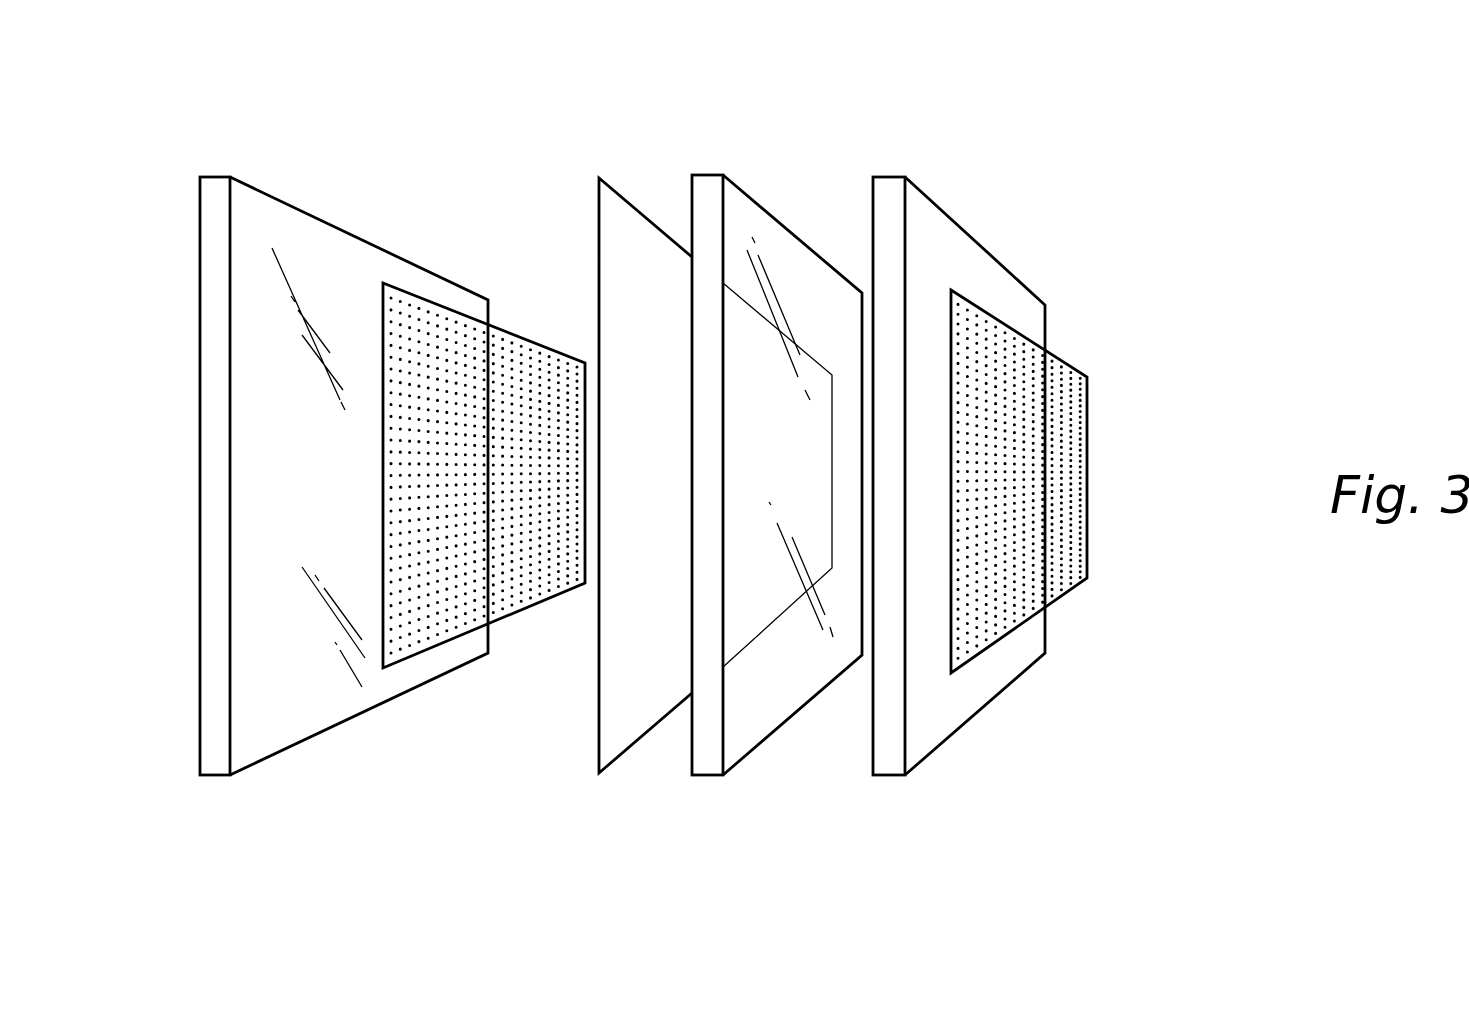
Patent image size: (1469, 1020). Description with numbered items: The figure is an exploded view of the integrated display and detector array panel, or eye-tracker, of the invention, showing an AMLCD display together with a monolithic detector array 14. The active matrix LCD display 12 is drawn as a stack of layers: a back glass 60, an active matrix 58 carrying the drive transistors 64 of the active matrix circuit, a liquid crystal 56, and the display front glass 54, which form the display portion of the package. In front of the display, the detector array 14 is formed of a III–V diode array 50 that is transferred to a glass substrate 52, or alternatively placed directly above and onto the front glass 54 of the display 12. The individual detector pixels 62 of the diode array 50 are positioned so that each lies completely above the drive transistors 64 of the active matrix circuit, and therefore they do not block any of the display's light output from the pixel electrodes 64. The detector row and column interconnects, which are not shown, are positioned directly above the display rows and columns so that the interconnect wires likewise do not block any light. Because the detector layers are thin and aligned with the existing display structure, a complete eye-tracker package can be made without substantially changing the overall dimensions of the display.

The active matrix LCD display 12 is at (740, 150).
The detector array 14 is at (1101, 450).
The III–V diode array 50 is at (1113, 481).
The glass substrate 52 is at (1002, 260).
The front glass 54 is at (763, 745).
The liquid crystal 56 is at (598, 733).
The active matrix 58 is at (484, 416).
The back glass 60 is at (297, 209).
The detector pixels 62 is at (1075, 438).
The drive transistors 64 is at (523, 358).